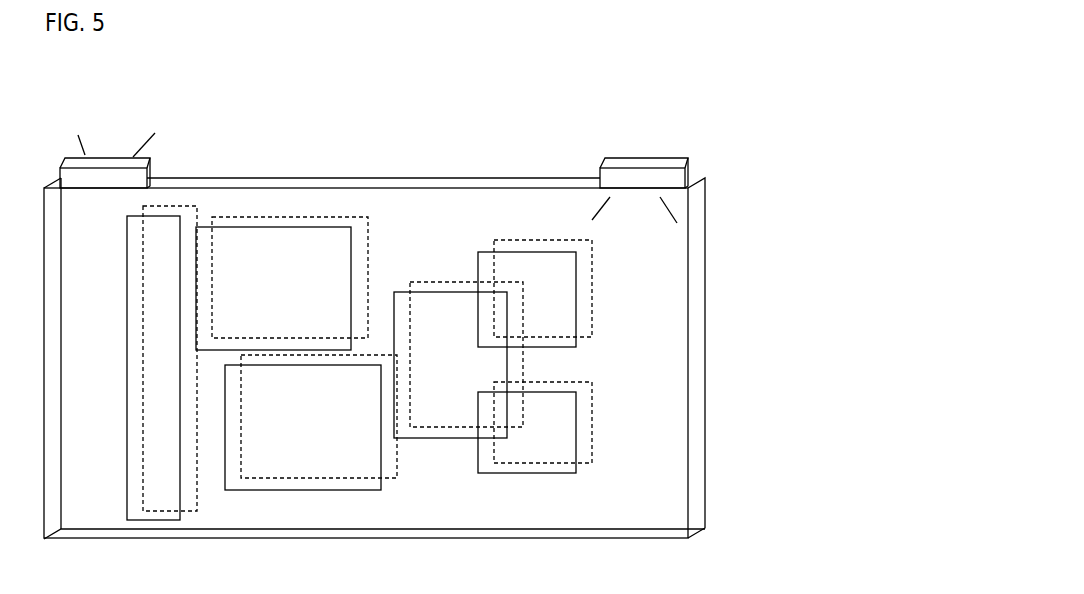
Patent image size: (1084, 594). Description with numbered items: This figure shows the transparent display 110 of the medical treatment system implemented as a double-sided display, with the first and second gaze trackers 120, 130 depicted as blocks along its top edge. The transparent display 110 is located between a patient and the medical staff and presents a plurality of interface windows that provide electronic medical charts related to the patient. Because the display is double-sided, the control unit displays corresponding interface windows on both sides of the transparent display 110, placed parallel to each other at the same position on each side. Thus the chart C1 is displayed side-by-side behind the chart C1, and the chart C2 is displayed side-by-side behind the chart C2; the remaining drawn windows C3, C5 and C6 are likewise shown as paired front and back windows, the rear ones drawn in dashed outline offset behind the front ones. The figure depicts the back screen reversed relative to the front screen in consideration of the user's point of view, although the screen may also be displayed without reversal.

The transparent display 110 is at (380, 180).
The first gaze tracker 120 is at (652, 161).
The second gaze tracker 130 is at (125, 161).
The interface window C1 is at (458, 360).
The interface window C2 is at (535, 293).
The interface window C3 is at (535, 427).
The interface window C5 is at (282, 283).
The interface window C6 is at (262, 363).